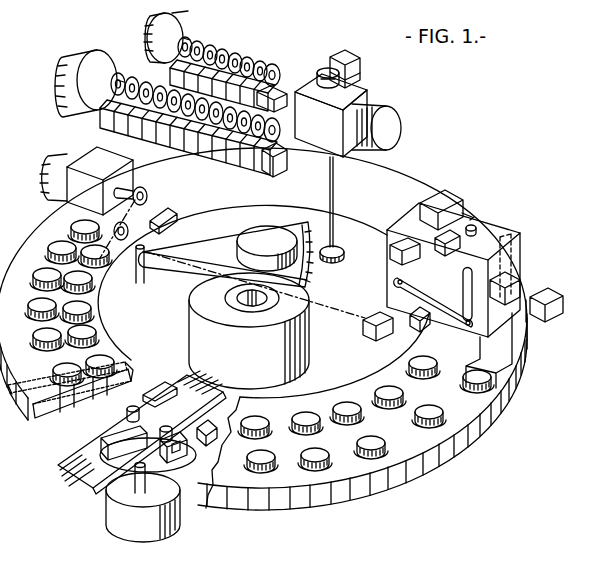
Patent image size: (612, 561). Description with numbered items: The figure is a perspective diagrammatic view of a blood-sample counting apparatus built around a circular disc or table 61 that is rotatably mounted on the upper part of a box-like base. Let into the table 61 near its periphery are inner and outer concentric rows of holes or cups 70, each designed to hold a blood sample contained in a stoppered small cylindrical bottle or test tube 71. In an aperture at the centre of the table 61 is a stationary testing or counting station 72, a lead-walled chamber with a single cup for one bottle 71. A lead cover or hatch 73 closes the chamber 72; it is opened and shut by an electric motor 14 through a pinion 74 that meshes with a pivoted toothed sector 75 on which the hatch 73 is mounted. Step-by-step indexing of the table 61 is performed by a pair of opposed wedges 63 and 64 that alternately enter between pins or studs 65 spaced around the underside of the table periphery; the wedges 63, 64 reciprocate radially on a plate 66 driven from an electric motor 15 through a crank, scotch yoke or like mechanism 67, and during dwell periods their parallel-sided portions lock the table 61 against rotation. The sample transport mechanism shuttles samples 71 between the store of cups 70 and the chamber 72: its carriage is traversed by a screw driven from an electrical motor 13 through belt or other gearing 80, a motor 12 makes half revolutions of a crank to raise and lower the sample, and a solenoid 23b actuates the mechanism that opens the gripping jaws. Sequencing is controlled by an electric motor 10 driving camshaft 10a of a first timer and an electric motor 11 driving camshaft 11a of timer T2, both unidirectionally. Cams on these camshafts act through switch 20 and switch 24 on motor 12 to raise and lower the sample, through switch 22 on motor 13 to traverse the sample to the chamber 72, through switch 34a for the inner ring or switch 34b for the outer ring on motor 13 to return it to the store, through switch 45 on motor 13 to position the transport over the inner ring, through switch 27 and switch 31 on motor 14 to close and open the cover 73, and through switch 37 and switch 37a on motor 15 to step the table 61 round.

The electric motor 10 is at (78, 56).
The camshaft 10a is at (177, 125).
The electric motor 11 is at (147, 32).
The camshaft 11a is at (214, 43).
The timer T2 is at (166, 13).
The electrical motor 13 is at (50, 185).
The belt or other gearing 80 is at (141, 189).
The switch 22 is at (168, 208).
The switch 31 is at (350, 56).
The switch 27 is at (362, 78).
The electric motor 14 is at (379, 110).
The solenoid 23b is at (441, 193).
The pivoted toothed sector 75 is at (225, 243).
The lead cover or hatch 73 is at (268, 237).
The pinion 74 is at (341, 252).
The motor 12 is at (423, 235).
The switch 24 is at (398, 262).
The switch 20 is at (447, 242).
The switch 37a is at (513, 290).
The switch 34b is at (548, 316).
The switch 34a is at (368, 319).
The switch 45 is at (408, 326).
The bottles or test tubes 71 is at (38, 268).
The holes or cups 70 is at (35, 346).
The testing or counting station 72 is at (194, 291).
The wedge 64 is at (163, 391).
The pins or studs 65 is at (163, 430).
The wedge 63 is at (120, 445).
The plate 66 is at (56, 467).
The switch 37 is at (213, 421).
The crank, scotch yoke or like mechanism 67 is at (172, 470).
The electric motor 15 is at (115, 522).
The circular disc or table 61 is at (432, 475).